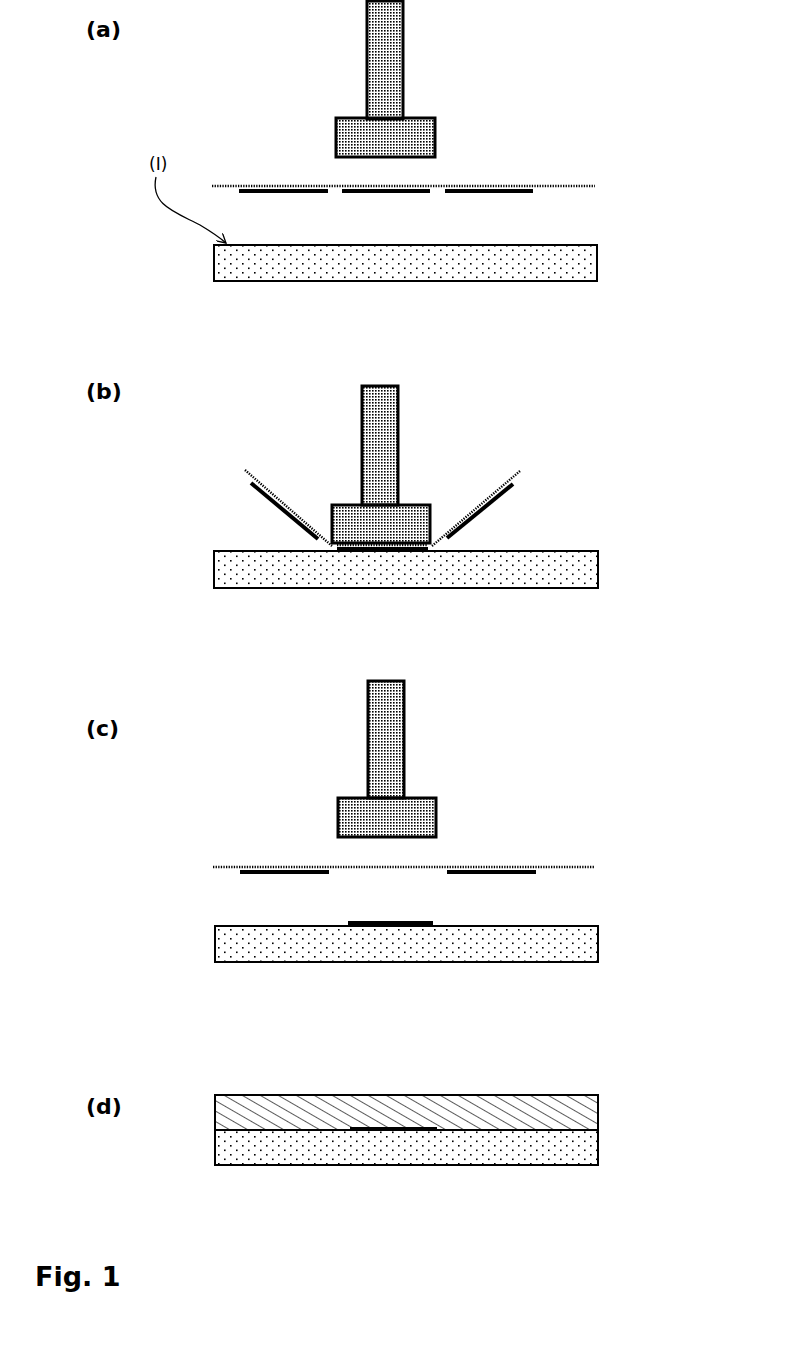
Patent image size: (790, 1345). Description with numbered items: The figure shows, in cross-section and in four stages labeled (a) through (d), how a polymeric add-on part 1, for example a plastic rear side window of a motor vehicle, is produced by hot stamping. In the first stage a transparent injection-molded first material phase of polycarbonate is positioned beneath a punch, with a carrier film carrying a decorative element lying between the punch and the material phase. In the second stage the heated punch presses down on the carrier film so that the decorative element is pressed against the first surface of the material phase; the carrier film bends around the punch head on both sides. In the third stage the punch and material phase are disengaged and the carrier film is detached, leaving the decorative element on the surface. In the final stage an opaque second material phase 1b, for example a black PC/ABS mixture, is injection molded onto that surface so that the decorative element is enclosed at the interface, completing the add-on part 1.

The polymeric add-on part 1 is at (449, 1102).
The second material phase 1b is at (582, 1111).